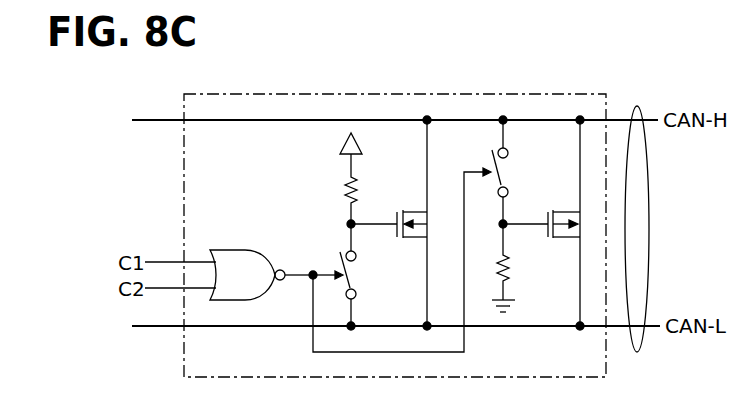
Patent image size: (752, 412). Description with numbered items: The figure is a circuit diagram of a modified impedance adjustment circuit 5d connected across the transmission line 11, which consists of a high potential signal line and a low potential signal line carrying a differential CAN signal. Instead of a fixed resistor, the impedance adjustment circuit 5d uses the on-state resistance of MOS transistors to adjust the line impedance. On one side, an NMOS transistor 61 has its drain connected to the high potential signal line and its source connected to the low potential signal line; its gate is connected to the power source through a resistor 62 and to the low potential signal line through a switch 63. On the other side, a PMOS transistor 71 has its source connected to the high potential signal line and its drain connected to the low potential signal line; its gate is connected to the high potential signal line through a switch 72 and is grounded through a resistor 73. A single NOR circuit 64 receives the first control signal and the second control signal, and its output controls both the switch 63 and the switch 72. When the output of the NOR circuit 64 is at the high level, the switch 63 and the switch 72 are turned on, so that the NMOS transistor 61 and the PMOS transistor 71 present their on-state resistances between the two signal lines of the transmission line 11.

The impedance adjustment circuit 5d is at (275, 93).
The transmission line 11 is at (637, 106).
The NMOS transistor 61 is at (406, 209).
The resistor 62 is at (346, 180).
The switch 63 is at (356, 278).
The NOR circuit 64 is at (224, 249).
The PMOS transistor 71 is at (556, 239).
The switch 72 is at (508, 173).
The resistor 73 is at (508, 279).